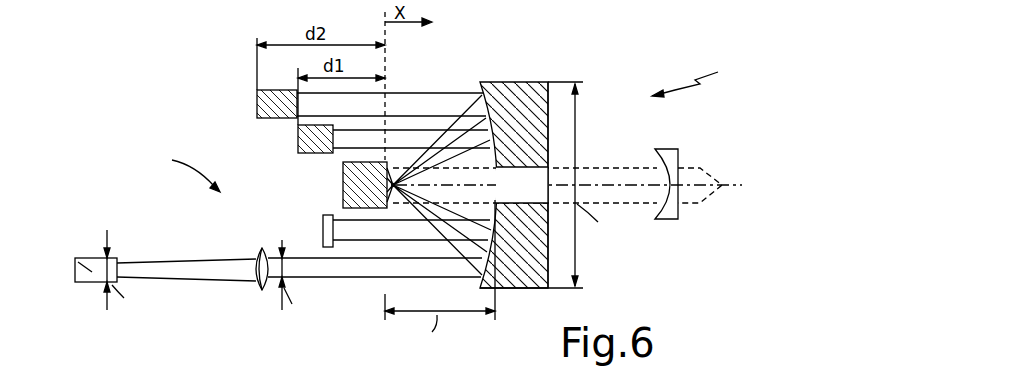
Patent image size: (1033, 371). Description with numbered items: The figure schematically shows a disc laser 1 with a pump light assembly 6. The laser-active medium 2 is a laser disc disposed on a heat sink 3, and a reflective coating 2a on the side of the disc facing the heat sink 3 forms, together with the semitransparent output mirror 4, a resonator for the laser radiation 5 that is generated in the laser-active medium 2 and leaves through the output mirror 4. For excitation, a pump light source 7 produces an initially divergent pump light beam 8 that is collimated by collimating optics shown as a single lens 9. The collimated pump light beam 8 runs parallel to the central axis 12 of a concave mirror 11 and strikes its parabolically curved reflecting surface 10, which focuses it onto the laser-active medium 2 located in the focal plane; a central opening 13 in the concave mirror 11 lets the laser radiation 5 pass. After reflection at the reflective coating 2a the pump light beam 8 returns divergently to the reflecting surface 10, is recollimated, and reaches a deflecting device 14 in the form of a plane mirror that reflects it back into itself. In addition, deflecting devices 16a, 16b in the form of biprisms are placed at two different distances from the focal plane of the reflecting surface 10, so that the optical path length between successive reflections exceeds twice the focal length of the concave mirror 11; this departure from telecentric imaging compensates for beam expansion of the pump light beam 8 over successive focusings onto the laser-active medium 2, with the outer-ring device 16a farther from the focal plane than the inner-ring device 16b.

The disc laser 1 is at (692, 76).
The laser-active medium 2 is at (396, 172).
The reflective coating 2a is at (393, 200).
The heat sink 3 is at (343, 180).
The semitransparent output mirror 4 is at (670, 152).
The laser radiation 5 is at (637, 166).
The pump light assembly 6 is at (190, 167).
The pump light source 7 is at (80, 262).
The pump light beam 8 is at (160, 262).
The collimating lens 9 is at (258, 255).
The reflecting surface 10 is at (480, 90).
The concave mirror 11 is at (522, 278).
The central axis 12 is at (632, 190).
The central opening 13 is at (560, 158).
The deflecting device 14 is at (401, 198).
The deflecting device 16a is at (262, 100).
The deflecting device 16b is at (298, 140).